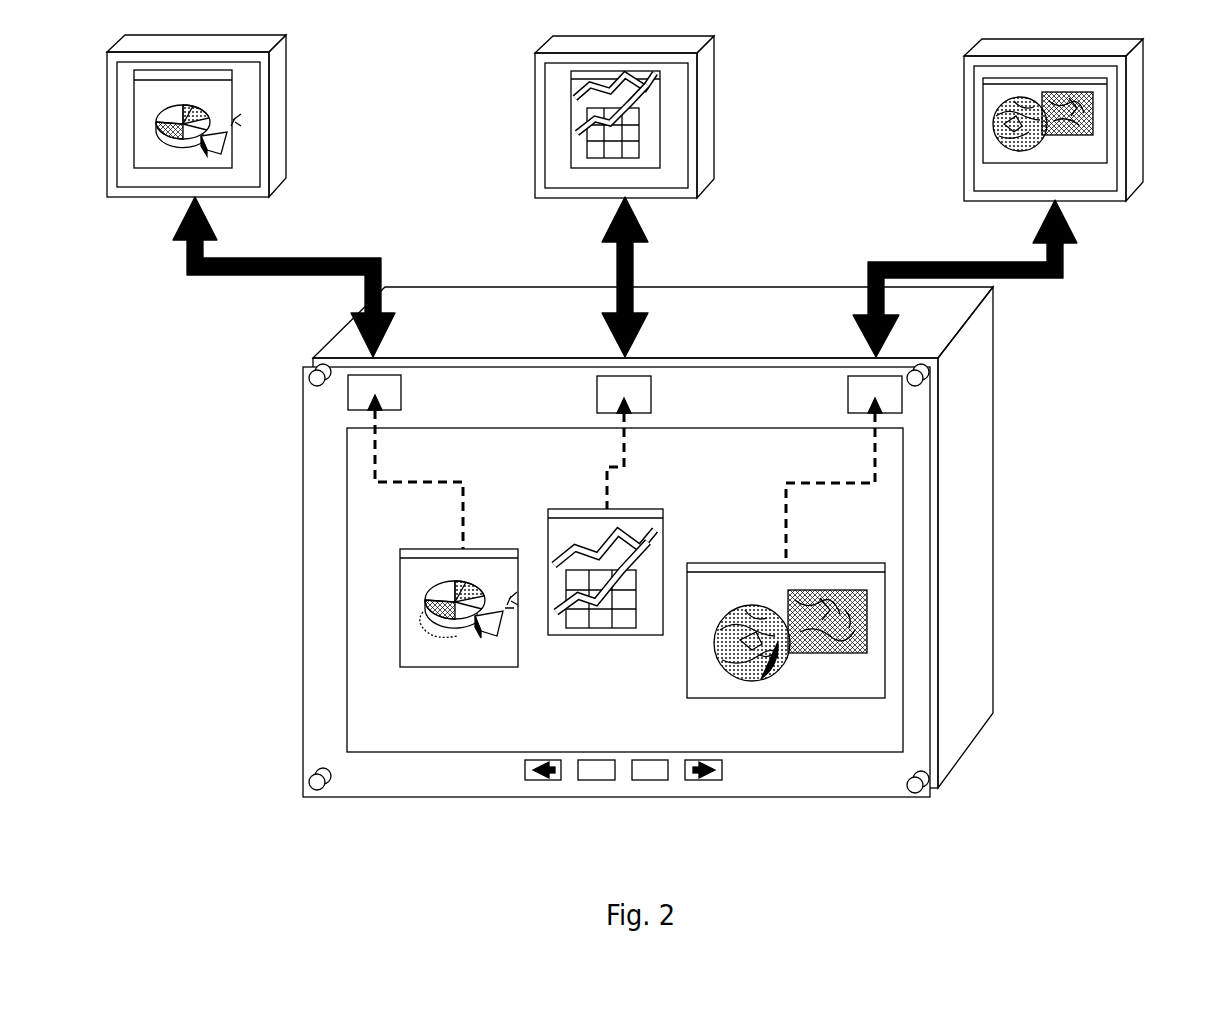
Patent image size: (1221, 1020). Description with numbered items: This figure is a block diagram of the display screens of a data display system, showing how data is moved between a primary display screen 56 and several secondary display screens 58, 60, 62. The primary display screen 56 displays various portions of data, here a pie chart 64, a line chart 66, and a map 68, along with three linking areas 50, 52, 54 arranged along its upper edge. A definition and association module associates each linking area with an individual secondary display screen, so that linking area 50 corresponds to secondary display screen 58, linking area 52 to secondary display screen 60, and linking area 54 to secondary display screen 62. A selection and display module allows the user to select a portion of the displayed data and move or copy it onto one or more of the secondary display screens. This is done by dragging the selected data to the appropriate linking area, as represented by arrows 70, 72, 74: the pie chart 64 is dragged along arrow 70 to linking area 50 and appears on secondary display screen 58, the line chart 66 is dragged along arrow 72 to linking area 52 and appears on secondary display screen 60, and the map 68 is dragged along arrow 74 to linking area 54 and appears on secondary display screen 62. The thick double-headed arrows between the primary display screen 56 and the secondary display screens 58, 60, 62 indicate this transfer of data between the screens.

The linking area 50 is at (401, 403).
The linking area 52 is at (597, 404).
The linking area 54 is at (848, 405).
The primary display screen 56 is at (313, 358).
The secondary display screen 58 is at (107, 104).
The secondary display screen 60 is at (535, 106).
The secondary display screen 62 is at (964, 108).
The pie chart 64 is at (400, 586).
The line chart 66 is at (548, 545).
The map 68 is at (687, 663).
The arrow 70 is at (463, 500).
The arrow 72 is at (607, 500).
The arrow 74 is at (786, 500).